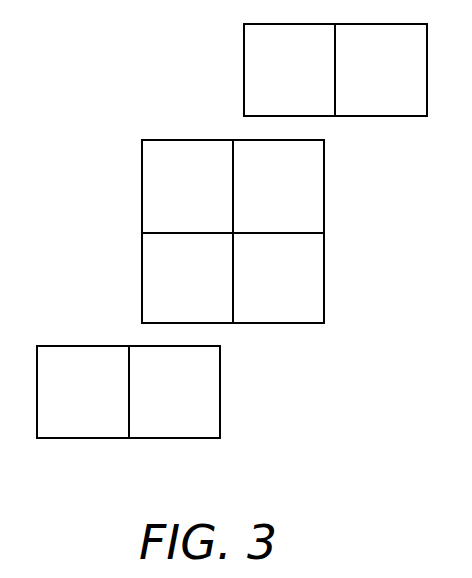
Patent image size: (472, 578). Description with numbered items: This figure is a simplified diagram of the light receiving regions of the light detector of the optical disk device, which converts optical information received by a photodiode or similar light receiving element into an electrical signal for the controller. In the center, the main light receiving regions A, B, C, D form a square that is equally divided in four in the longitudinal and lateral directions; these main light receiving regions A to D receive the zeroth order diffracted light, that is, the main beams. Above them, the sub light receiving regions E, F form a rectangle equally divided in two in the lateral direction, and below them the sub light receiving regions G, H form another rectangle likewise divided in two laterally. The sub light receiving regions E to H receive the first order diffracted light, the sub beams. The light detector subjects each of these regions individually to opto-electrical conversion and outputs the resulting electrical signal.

The main light receiving region A is at (187, 186).
The main light receiving region B is at (278, 186).
The main light receiving region C is at (278, 278).
The main light receiving region D is at (187, 278).
The sub light receiving region E is at (289, 70).
The sub light receiving region F is at (381, 70).
The sub light receiving region G is at (83, 392).
The sub light receiving region H is at (174, 392).